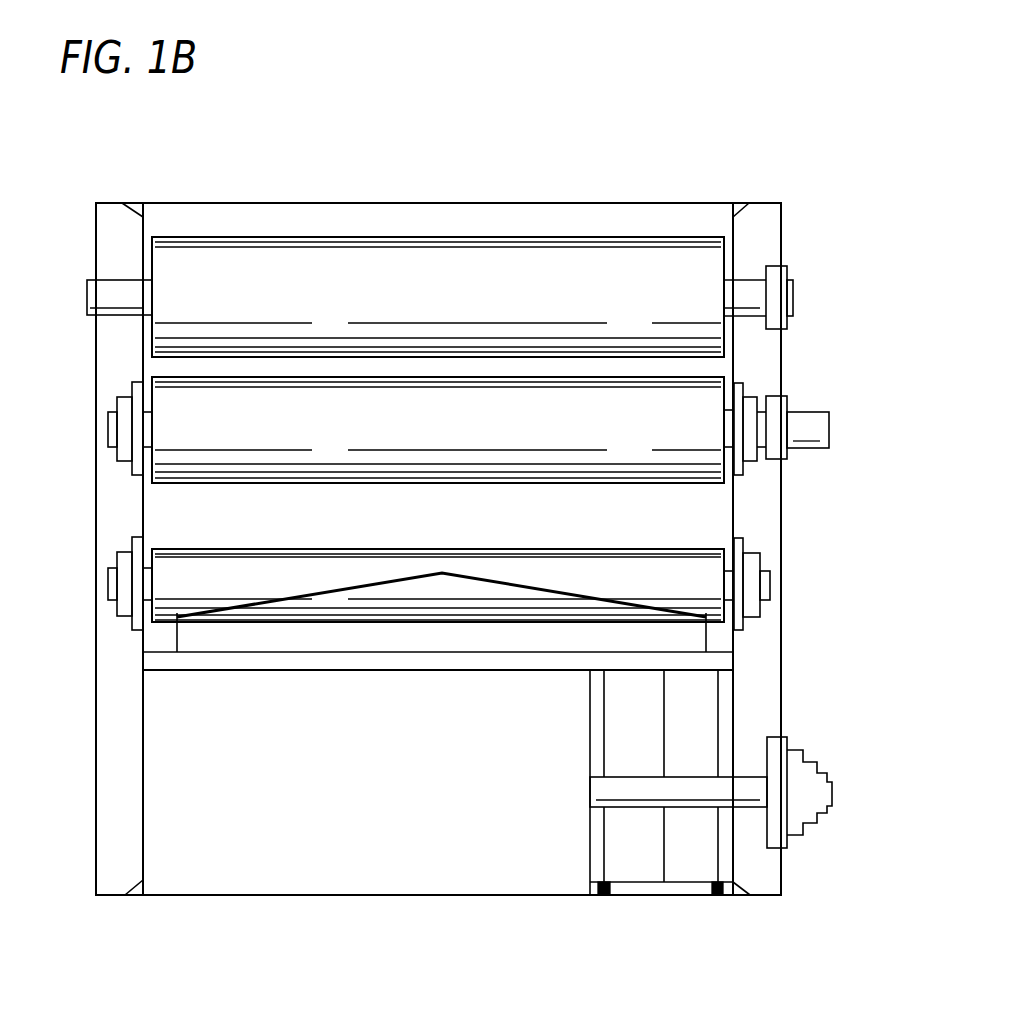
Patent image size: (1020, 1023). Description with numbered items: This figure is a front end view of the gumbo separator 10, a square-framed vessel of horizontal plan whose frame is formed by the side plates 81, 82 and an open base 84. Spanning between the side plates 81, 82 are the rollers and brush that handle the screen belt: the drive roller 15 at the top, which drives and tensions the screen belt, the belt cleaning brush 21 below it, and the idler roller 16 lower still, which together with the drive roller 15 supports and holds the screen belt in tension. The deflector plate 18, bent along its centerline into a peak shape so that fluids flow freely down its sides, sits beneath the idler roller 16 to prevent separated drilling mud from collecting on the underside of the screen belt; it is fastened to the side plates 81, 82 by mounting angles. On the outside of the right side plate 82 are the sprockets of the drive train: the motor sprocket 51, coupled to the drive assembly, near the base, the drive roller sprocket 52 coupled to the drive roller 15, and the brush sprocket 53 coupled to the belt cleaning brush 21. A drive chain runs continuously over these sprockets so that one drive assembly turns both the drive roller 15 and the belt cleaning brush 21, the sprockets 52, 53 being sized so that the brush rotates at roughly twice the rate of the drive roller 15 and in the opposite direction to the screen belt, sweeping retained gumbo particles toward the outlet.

The gumbo separator 10 is at (567, 108).
The drive roller 15 is at (234, 307).
The idler roller 16 is at (227, 592).
The deflector plate 18 is at (176, 634).
The belt cleaning brush 21 is at (234, 437).
The motor sprocket 51 is at (825, 803).
The drive roller sprocket 52 is at (793, 297).
The brush sprocket 53 is at (823, 408).
The side plate 81 is at (143, 512).
The side plate 82 is at (733, 708).
The open base 84 is at (332, 896).